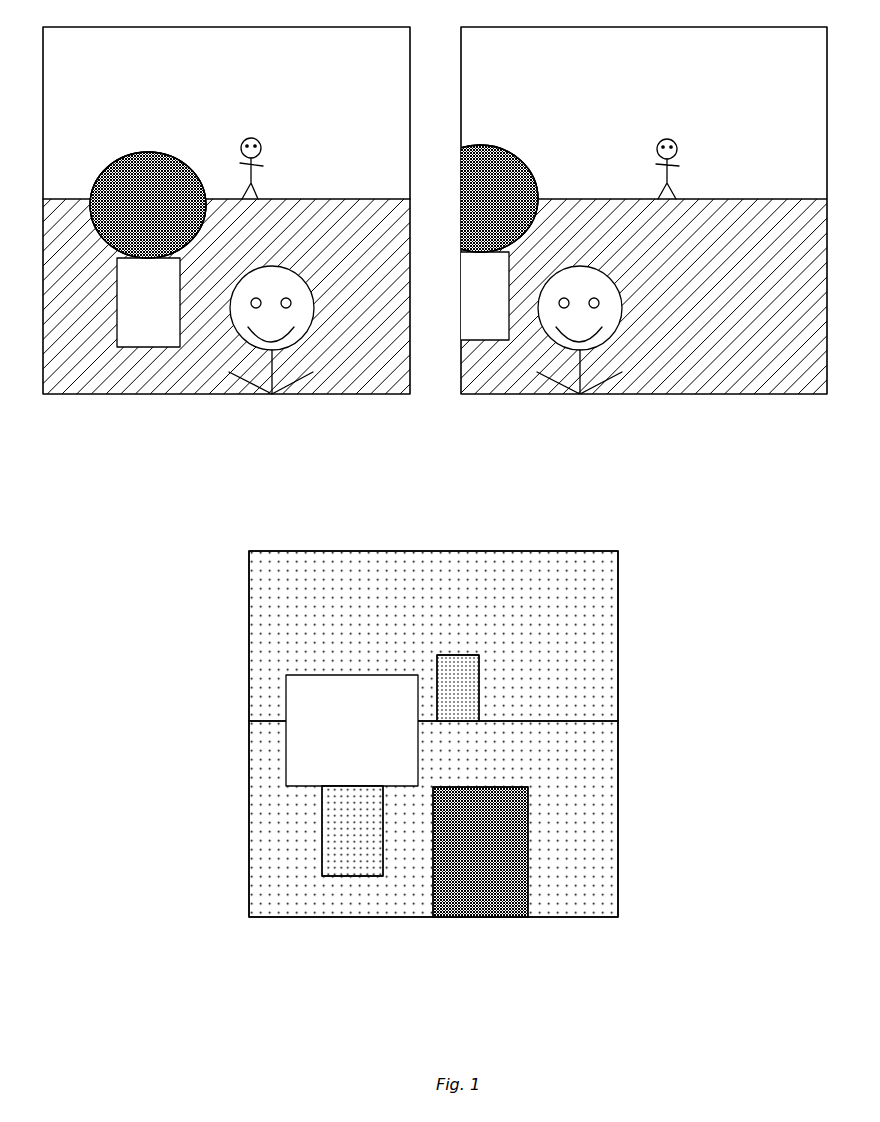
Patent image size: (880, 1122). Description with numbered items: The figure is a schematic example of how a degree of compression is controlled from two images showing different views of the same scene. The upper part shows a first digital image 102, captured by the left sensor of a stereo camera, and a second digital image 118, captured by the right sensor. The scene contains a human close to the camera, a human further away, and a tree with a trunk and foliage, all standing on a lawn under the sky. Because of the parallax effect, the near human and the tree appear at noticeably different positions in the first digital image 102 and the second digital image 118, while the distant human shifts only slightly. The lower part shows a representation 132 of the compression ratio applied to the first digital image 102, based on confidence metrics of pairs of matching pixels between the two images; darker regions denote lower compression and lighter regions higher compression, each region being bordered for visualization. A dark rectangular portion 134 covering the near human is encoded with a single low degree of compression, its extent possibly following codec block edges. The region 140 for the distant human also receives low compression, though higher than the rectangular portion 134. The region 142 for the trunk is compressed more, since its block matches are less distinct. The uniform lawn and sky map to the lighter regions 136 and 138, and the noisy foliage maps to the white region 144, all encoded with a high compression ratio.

The first digital image 102 is at (145, 394).
The second digital image 118 is at (757, 394).
The representation of the compression ratio 132 is at (199, 613).
The rectangular portion 134 is at (495, 908).
The region 136 is at (580, 786).
The region 138 is at (591, 671).
The region 140 is at (479, 671).
The region 142 is at (338, 830).
The white region 144 is at (336, 735).